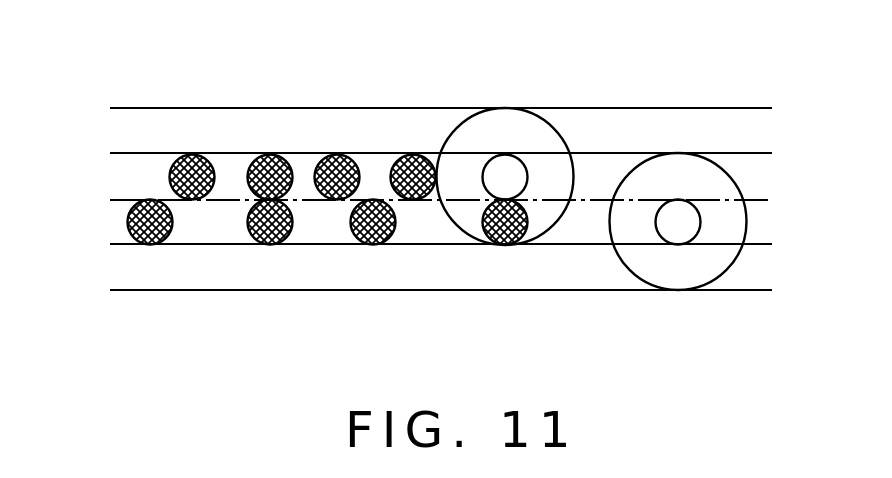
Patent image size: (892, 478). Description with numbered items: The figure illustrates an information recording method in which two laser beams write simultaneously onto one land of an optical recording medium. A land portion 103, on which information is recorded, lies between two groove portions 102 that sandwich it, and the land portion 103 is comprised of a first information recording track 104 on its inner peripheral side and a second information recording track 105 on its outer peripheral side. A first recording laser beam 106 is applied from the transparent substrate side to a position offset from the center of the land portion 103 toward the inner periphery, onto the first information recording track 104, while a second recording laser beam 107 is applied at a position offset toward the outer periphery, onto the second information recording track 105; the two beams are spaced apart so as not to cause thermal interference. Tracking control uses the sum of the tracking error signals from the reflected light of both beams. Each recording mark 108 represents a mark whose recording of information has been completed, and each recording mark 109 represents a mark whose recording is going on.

The groove portion 102 is at (758, 136).
The land portion 103 is at (94, 153).
The first information recording track 104 is at (760, 180).
The second information recording track 105 is at (762, 228).
The first recording laser beam 106 is at (532, 133).
The second recording laser beam 107 is at (640, 265).
The recording mark 108 is at (192, 155).
The recording mark 109 is at (500, 175).